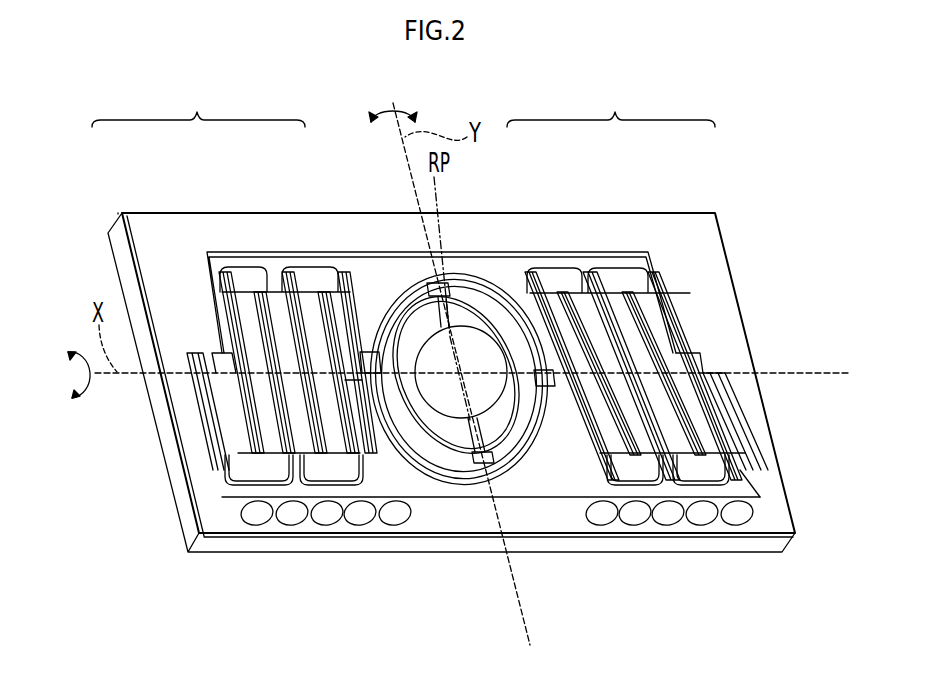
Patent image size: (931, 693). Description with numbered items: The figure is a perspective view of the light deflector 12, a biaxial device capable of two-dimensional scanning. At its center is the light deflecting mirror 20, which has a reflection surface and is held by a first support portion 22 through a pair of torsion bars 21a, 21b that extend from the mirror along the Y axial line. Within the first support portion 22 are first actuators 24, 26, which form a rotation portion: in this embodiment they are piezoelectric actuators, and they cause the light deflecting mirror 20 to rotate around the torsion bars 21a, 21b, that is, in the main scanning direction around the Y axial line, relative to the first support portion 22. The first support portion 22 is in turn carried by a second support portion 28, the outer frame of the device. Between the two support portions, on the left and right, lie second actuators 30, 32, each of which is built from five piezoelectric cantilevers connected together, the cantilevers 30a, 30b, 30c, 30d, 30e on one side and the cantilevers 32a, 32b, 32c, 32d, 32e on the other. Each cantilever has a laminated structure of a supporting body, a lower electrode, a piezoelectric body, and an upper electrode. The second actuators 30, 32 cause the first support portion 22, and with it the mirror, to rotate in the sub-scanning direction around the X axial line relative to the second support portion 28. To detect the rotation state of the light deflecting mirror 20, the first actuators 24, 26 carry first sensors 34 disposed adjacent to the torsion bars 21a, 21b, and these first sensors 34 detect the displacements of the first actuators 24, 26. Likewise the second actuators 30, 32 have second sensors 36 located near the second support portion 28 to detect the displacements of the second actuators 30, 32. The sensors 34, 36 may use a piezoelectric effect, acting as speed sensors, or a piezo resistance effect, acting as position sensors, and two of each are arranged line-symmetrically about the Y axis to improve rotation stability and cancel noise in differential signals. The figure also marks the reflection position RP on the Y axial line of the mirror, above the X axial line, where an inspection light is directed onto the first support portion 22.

The light deflector 12 is at (92, 247).
The light deflecting mirror 20 is at (432, 432).
The torsion bar 21a is at (458, 300).
The torsion bar 21b is at (452, 440).
The first support portion 22 is at (392, 292).
The first actuator 24 is at (370, 352).
The first actuator 26 is at (512, 437).
The second support portion 28 is at (202, 483).
The second actuator 30 is at (234, 282).
The piezoelectric cantilever 30a is at (341, 275).
The piezoelectric cantilever 30b is at (320, 292).
The piezoelectric cantilever 30c is at (286, 278).
The piezoelectric cantilever 30d is at (255, 292).
The piezoelectric cantilever 30e is at (215, 352).
The second actuator 32 is at (626, 282).
The piezoelectric cantilever 32a is at (530, 280).
The piezoelectric cantilever 32b is at (561, 292).
The piezoelectric cantilever 32c is at (589, 280).
The piezoelectric cantilever 32d is at (627, 292).
The piezoelectric cantilever 32e is at (700, 353).
The first sensor 34 is at (437, 286).
The second sensor 36 is at (202, 430).